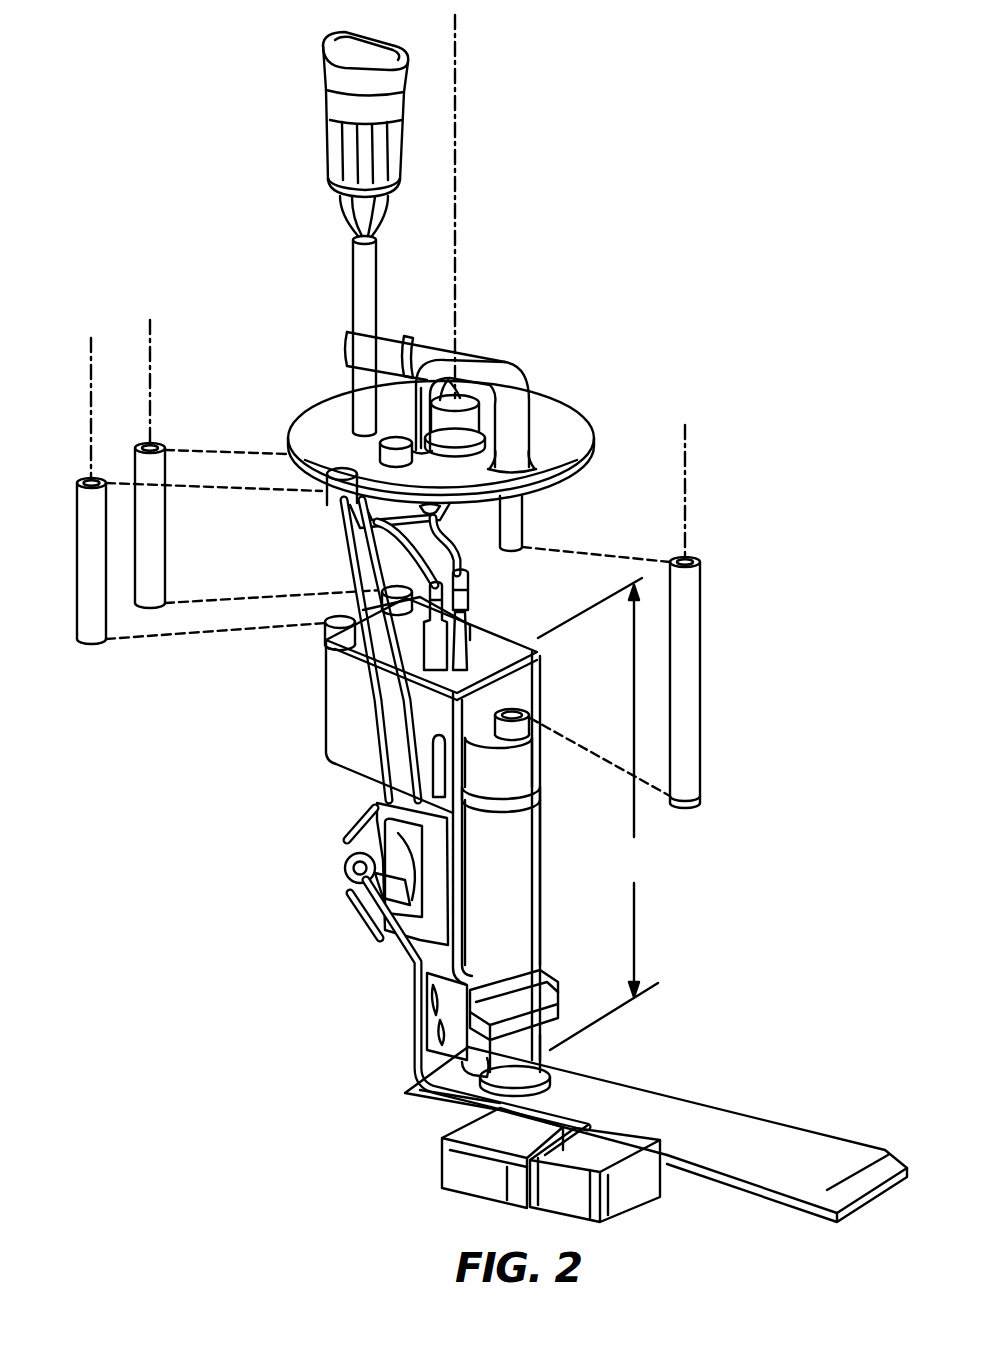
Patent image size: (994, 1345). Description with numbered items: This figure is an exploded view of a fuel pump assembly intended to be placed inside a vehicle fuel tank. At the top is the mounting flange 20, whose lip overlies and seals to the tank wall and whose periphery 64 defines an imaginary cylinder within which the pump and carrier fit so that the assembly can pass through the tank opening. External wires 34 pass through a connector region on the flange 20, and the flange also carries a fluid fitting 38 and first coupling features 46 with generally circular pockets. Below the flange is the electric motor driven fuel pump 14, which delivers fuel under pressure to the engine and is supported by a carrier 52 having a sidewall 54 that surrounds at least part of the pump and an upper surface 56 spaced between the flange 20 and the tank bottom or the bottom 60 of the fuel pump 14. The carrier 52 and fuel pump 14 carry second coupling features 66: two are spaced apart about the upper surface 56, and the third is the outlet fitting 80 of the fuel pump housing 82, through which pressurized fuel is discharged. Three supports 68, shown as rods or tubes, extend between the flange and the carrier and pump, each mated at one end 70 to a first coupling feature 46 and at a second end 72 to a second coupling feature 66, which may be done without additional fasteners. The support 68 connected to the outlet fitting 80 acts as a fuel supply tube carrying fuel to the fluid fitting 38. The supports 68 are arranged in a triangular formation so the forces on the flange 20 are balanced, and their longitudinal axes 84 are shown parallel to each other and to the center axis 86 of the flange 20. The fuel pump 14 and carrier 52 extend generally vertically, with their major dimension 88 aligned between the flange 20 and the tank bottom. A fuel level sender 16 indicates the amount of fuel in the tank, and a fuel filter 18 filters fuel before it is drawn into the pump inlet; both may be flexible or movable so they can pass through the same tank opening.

The fuel pump 14 is at (556, 877).
The fuel level sender 16 is at (378, 963).
The fuel filter 18 is at (778, 1147).
The mounting flange 20 is at (565, 440).
The wires 34 is at (372, 258).
The fluid fitting 38 is at (463, 357).
The first coupling features 46 is at (403, 462).
The carrier 52 is at (328, 769).
The sidewall 54 is at (458, 903).
The upper surface 56 is at (350, 668).
The bottom 60 is at (440, 1107).
The periphery 64 is at (582, 454).
The second coupling features 66 is at (340, 618).
The supports 68 is at (150, 590).
The end 70 is at (88, 478).
The second end 72 is at (93, 639).
The outlet fitting 80 is at (518, 712).
The fuel pump housing 82 is at (530, 832).
The longitudinal axes 84 is at (150, 378).
The center axis 86 is at (455, 30).
The major dimension 88 is at (598, 814).